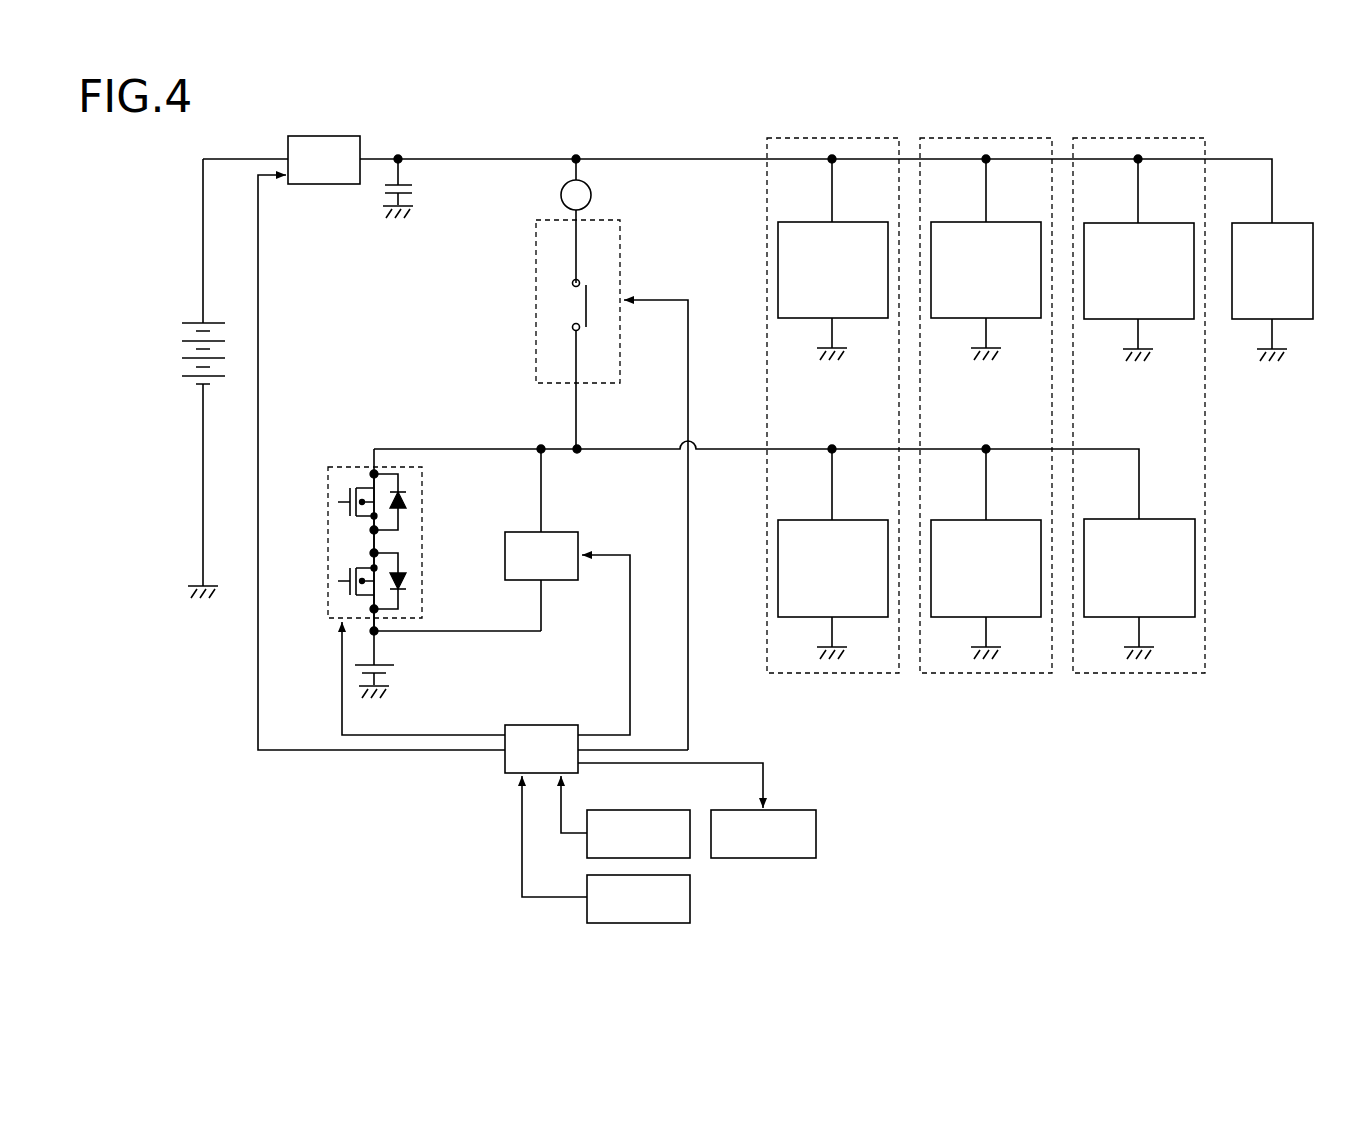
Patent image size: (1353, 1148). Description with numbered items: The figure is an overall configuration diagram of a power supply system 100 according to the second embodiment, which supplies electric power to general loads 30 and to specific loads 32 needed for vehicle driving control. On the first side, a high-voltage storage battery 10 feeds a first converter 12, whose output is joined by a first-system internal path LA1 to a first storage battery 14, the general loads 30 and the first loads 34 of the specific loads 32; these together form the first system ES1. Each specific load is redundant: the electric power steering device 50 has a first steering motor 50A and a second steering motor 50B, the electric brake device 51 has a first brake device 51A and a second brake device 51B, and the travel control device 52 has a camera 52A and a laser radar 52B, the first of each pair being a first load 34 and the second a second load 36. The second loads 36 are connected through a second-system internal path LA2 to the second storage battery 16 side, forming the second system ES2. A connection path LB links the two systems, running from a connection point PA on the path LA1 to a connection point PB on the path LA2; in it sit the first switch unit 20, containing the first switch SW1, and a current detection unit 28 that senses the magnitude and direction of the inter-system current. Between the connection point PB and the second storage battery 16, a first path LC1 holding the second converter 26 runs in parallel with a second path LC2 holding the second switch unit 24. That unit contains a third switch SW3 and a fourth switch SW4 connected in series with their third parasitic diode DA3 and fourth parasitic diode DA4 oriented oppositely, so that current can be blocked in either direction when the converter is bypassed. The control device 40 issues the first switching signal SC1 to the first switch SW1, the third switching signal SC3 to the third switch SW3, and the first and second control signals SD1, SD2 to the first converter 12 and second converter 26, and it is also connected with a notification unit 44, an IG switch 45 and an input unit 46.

The high-voltage storage battery 10 is at (194, 324).
The first DC-to-DC converter 12 is at (302, 136).
The first storage battery 14 is at (399, 187).
The second storage battery 16 is at (390, 670).
The first switch unit 20 is at (583, 327).
The second switch unit 24 is at (374, 528).
The second DC-to-DC converter 26 is at (565, 582).
The current detection unit 28 is at (561, 203).
The general loads 30 is at (1294, 222).
The specific loads 32 is at (1268, 395).
The first load 34 is at (1212, 326).
The second load 36 is at (1212, 533).
The control device 40 is at (528, 725).
The notification unit 44 is at (788, 810).
The IG switch 45 is at (662, 810).
The input unit 46 is at (586, 911).
The electric power steering device 50 is at (833, 384).
The first steering motor 50A is at (852, 222).
The second steering motor 50B is at (852, 519).
The electric brake device 51 is at (986, 384).
The first brake device 51A is at (1004, 222).
The second brake device 51B is at (1004, 519).
The travel control device 52 is at (1139, 384).
The camera 52A is at (1156, 222).
The laser radar 52B is at (1156, 519).
The power supply system 100 is at (1318, 105).
The first switch SW1 is at (595, 285).
The third switch SW3 is at (339, 499).
The fourth switch SW4 is at (339, 578).
The third parasitic diode DA3 is at (409, 488).
The fourth parasitic diode DA4 is at (405, 587).
The first system ES1 is at (449, 150).
The second system ES2 is at (446, 442).
The first-system internal path LA1 is at (712, 156).
The second-system internal path LA2 is at (735, 452).
The connection path LB is at (582, 168).
The first path LC1 is at (544, 499).
The second path LC2 is at (521, 453).
The connection point PA is at (574, 156).
The connection point PB is at (582, 456).
The first switching signal SC1 is at (633, 525).
The third switching signal SC3 is at (423, 678).
The first control signal SD1 is at (381, 462).
The second control signal SD2 is at (602, 645).